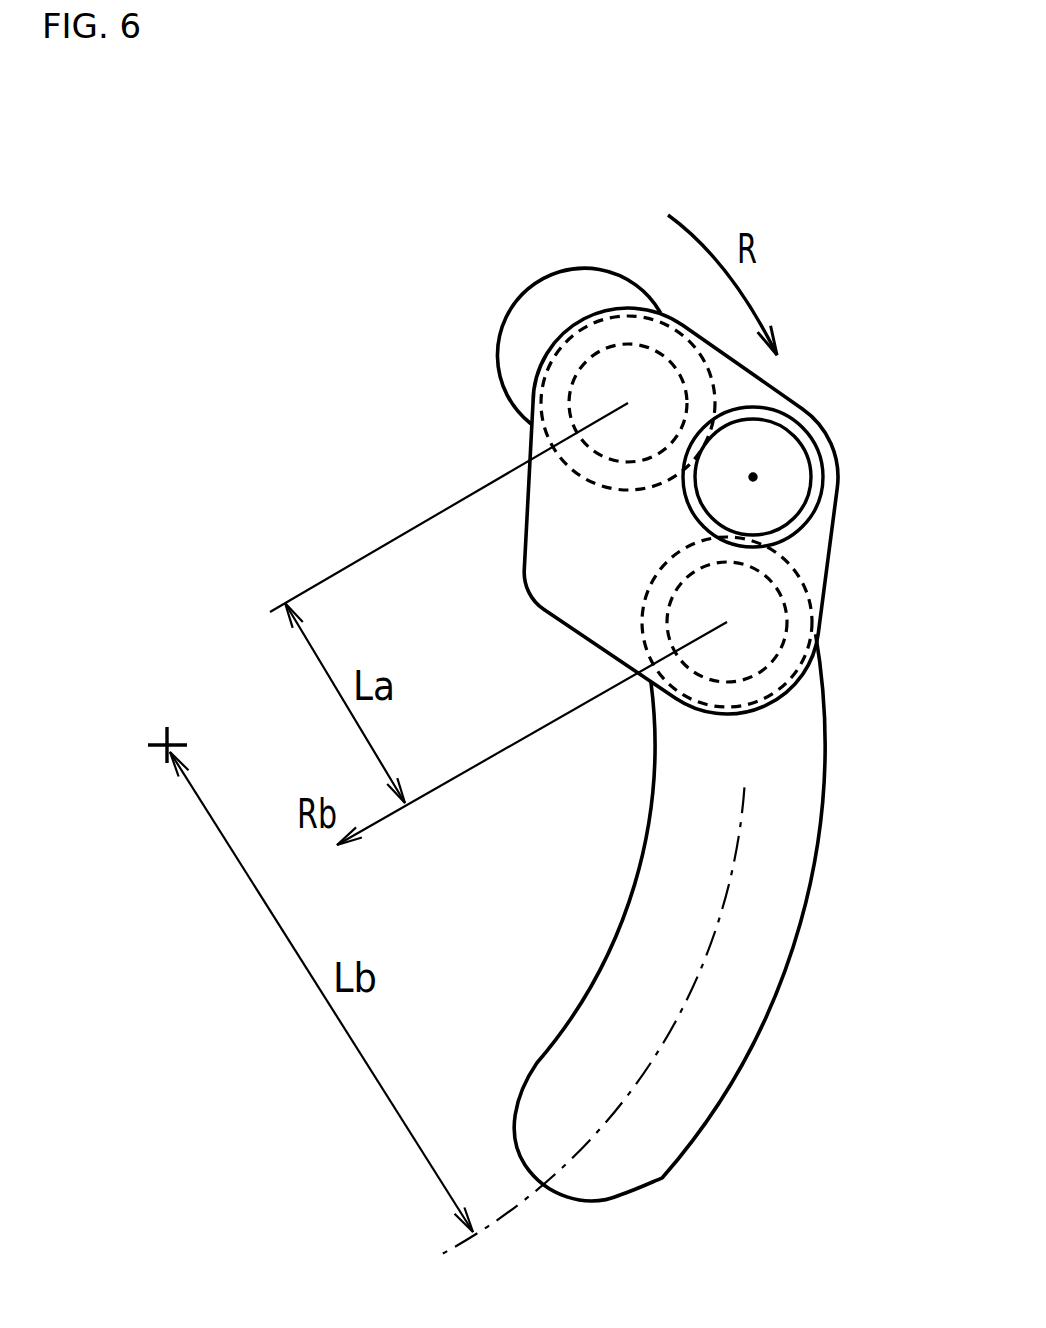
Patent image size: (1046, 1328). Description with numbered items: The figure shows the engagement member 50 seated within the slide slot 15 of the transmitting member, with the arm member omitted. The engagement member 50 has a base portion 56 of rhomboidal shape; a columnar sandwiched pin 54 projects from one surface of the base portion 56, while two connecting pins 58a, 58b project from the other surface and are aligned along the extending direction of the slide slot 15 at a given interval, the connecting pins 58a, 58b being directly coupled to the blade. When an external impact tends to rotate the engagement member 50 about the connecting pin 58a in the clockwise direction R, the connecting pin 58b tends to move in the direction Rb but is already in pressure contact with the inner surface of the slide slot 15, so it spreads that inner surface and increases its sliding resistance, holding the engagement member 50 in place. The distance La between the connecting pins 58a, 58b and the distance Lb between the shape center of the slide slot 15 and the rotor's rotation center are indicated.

The slide slot 15 is at (632, 893).
The engagement member 50 is at (517, 567).
The sandwiched pin 54 is at (753, 478).
The base portion 56 is at (537, 512).
The connecting pin 58a is at (537, 378).
The connecting pin 58b is at (688, 700).